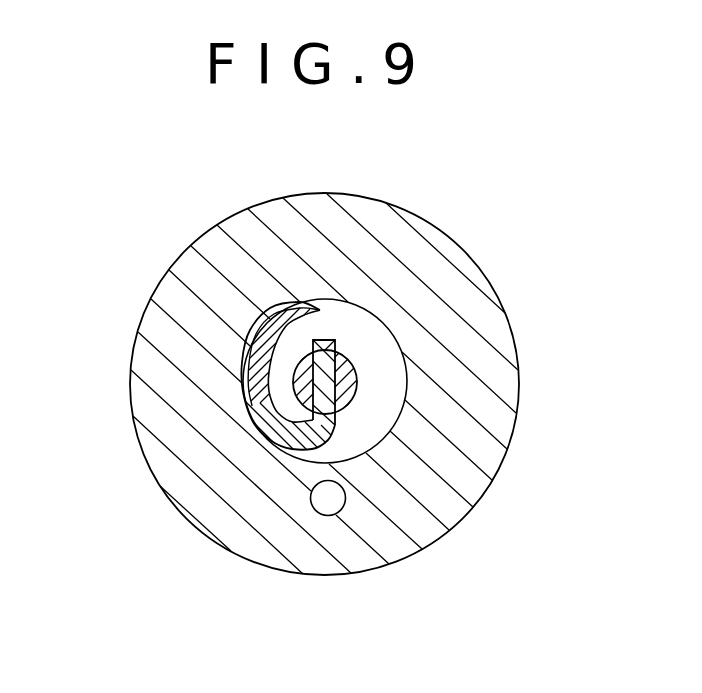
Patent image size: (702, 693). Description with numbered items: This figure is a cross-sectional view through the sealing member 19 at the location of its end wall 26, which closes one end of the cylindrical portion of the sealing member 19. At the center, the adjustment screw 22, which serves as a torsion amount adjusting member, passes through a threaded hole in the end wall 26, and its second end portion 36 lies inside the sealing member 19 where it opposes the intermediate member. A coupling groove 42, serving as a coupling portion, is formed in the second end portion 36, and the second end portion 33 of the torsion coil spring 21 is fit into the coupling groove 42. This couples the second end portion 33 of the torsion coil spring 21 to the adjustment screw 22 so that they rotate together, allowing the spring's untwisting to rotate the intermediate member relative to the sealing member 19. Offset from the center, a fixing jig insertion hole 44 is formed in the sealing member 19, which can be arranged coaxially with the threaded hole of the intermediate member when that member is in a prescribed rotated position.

The sealing member 19 is at (487, 487).
The torsion coil spring 21 is at (245, 405).
The adjustment screw 22 is at (357, 404).
The end wall 26 is at (337, 339).
The second end portion of the torsion coil spring 33 is at (357, 380).
The second end portion of the adjustment screw 36 is at (348, 354).
The coupling groove 42 is at (331, 339).
The fixing jig insertion hole 44 is at (345, 496).